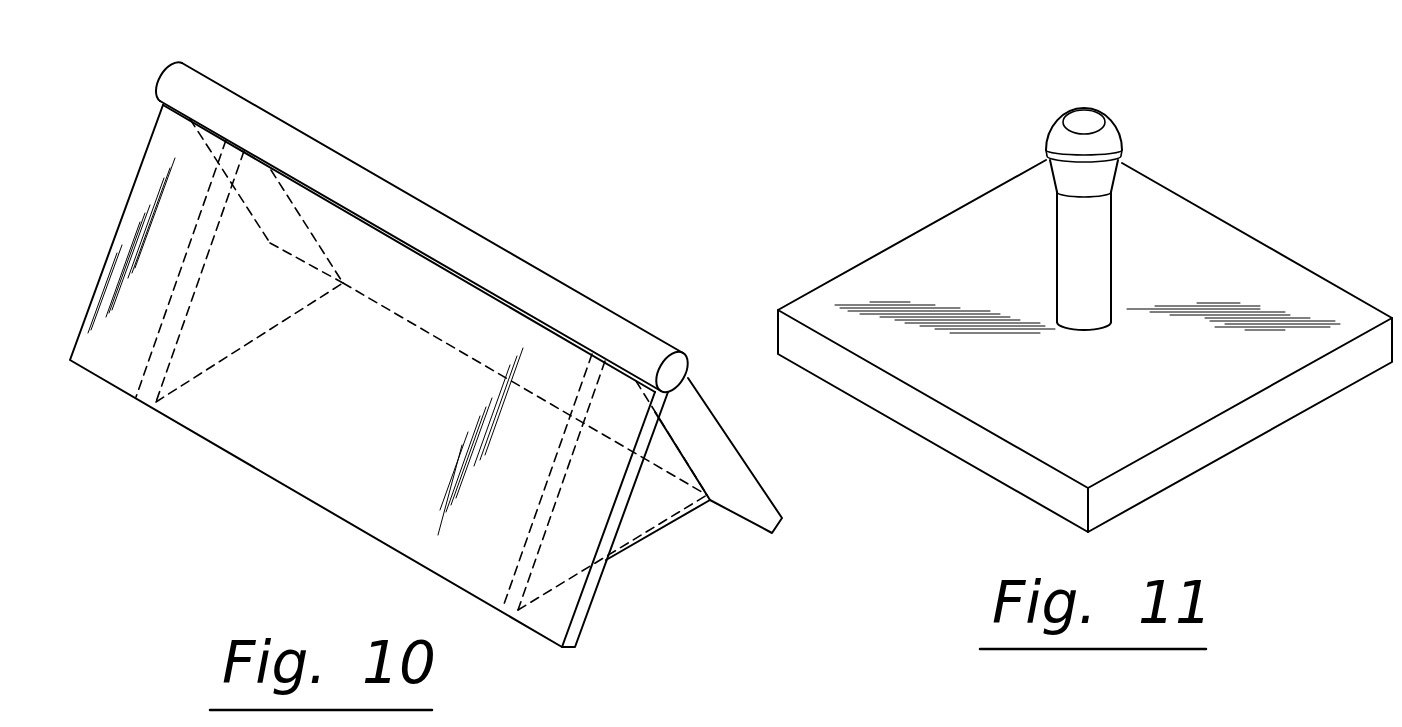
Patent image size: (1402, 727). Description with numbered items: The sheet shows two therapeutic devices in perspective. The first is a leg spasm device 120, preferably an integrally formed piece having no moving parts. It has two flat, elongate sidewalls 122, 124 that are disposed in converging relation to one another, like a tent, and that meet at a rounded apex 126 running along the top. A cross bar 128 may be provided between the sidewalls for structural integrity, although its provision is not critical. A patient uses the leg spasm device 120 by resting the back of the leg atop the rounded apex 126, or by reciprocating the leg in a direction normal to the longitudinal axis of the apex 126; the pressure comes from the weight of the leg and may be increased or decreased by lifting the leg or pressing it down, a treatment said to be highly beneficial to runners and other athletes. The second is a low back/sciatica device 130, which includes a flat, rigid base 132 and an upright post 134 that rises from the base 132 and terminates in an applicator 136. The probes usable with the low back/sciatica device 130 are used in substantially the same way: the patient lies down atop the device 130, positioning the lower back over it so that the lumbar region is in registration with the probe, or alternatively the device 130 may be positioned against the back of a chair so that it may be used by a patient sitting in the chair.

In FIG. 10, the leg spasm device 120 is at (468, 112).
In FIG. 10, the sidewall 122 is at (360, 545).
In FIG. 10, the sidewall 124 is at (742, 455).
In FIG. 10, the rounded apex 126 is at (420, 200).
In FIG. 10, the cross bar 128 is at (660, 518).
In FIG. 11, the low back/sciatica device 130 is at (937, 145).
In FIG. 11, the base 132 is at (913, 282).
In FIG. 11, the post 134 is at (1103, 257).
In FIG. 11, the applicator 136 is at (1095, 122).